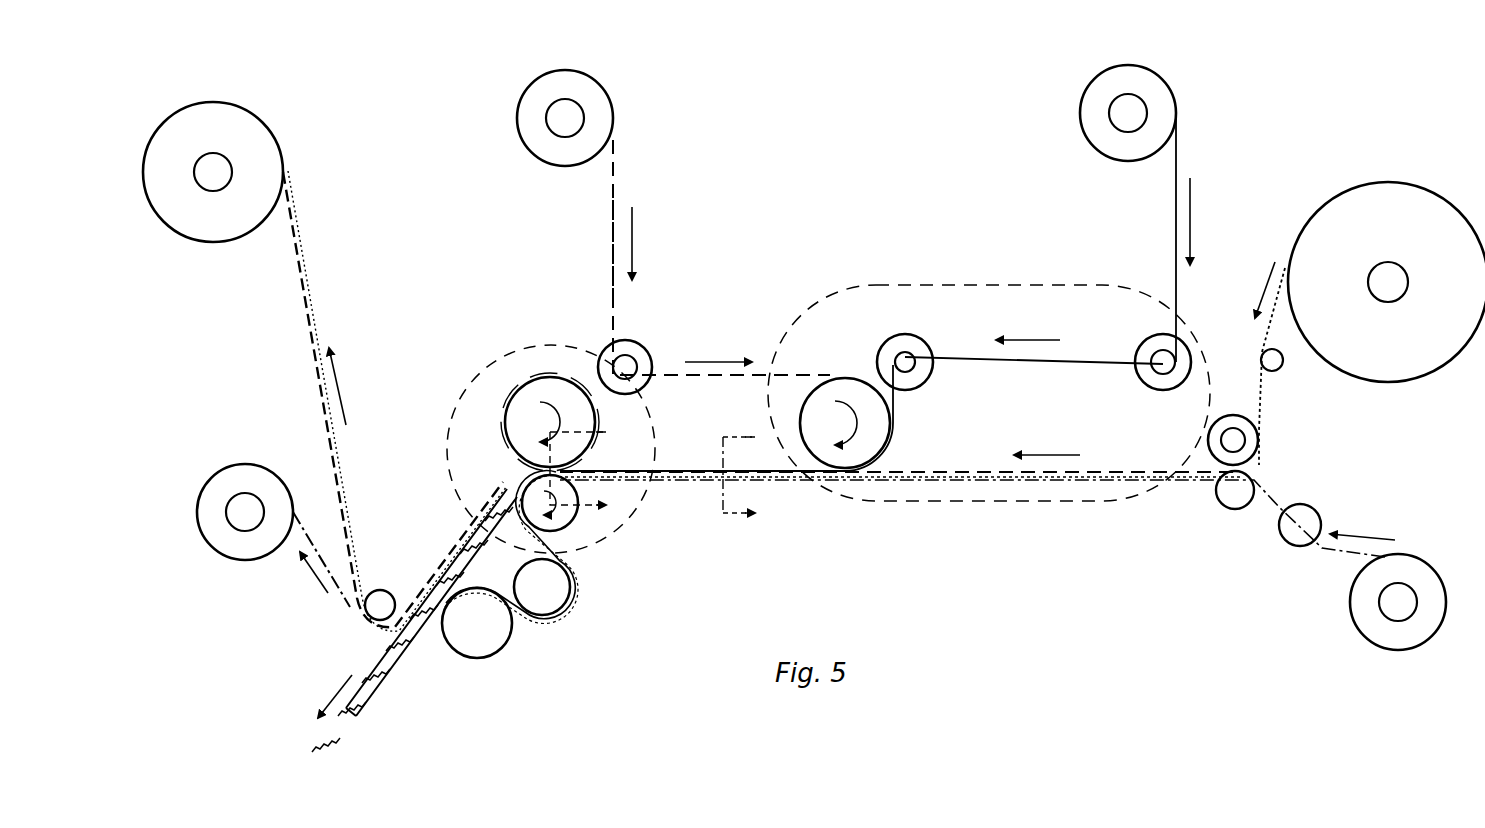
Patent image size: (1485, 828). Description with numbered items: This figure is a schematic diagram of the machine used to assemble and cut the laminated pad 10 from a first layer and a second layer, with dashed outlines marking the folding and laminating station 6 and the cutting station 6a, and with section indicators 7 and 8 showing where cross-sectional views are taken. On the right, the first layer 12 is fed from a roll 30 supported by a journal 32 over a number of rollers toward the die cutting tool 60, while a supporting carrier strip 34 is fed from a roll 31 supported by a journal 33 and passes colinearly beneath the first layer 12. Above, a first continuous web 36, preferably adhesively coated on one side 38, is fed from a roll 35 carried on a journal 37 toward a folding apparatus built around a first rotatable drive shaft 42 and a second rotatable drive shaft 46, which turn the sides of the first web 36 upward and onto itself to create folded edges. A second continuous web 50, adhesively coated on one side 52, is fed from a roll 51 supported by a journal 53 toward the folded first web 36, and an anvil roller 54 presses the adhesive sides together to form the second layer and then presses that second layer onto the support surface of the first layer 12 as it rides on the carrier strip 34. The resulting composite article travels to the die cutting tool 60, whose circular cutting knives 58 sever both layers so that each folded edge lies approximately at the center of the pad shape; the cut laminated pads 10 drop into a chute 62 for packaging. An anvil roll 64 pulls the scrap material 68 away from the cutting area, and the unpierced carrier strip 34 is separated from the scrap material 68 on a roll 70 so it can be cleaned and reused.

The laminating station 6 is at (826, 300).
The cutting and applying station 6a is at (520, 345).
The section line 7- 7 is at (748, 475).
The section line 8- 8 is at (589, 468).
The laminated pad 10 is at (332, 735).
The first layer 12 is at (1255, 300).
The roll 30 is at (1433, 225).
The roll 31 is at (1432, 598).
The journal 32 is at (1398, 292).
The journal 33 is at (1402, 614).
The supporting carrier strip 34 is at (314, 528).
The roll 35 is at (1160, 80).
The first continuous web 36 is at (1180, 226).
The journal 37 is at (1120, 108).
The adhesively coated side 38 is at (1176, 262).
The first rotatable drive shaft 42 is at (1168, 364).
The second rotatable drive shaft 46 is at (910, 364).
The second continuous web 50 is at (615, 196).
The roll 51 is at (525, 120).
The adhesively coated side 52 is at (615, 262).
The journal 53 is at (575, 115).
The anvil roller 54 is at (878, 432).
The cutting knives 58 is at (602, 348).
The die cutting tool 60 is at (530, 405).
The chute 62 is at (402, 647).
The anvil roll 64 is at (565, 520).
The scrap material 68 is at (307, 290).
The roll 70 is at (245, 520).